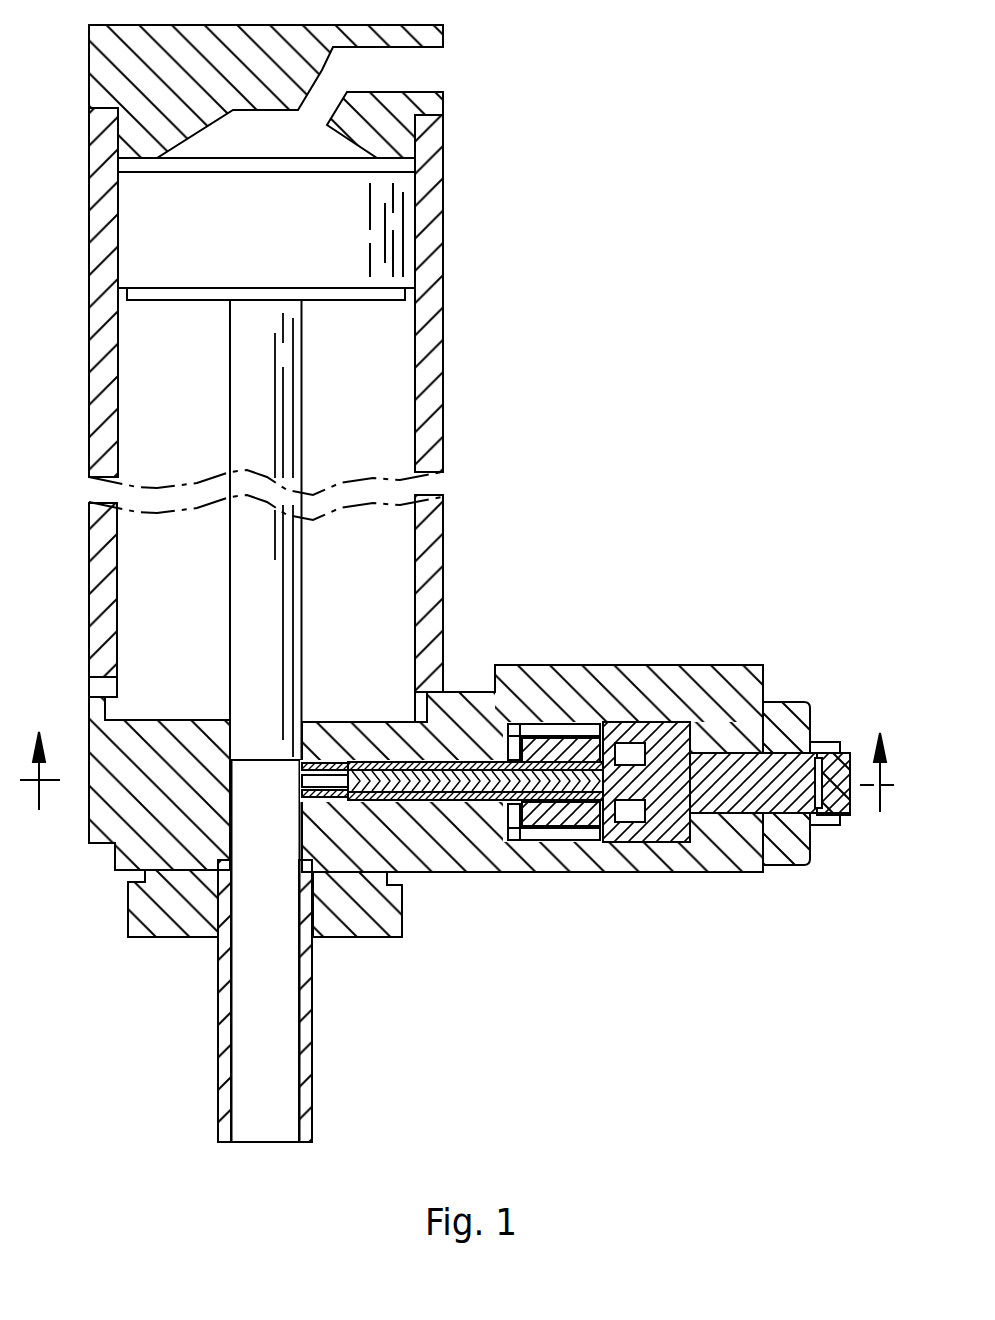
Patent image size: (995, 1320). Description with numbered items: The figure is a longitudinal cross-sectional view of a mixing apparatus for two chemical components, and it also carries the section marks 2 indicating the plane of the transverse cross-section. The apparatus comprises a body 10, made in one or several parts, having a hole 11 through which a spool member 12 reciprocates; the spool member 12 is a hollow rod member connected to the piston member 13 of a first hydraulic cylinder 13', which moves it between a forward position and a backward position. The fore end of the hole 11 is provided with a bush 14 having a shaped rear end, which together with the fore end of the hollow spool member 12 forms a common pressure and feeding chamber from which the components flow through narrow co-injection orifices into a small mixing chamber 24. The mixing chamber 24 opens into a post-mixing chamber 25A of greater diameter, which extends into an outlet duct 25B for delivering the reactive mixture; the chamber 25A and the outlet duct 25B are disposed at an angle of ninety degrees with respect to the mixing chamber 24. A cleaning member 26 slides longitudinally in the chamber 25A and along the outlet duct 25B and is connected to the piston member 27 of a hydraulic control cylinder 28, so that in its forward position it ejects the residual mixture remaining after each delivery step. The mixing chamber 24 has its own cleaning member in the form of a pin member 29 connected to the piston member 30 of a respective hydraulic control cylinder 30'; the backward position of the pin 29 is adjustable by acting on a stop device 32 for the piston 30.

The body 10 is at (105, 815).
The hole 11 is at (465, 793).
The spool member 12 is at (490, 797).
The piston member 13 is at (561, 707).
The first hydraulic cylinder 13' is at (554, 700).
The bush 14 is at (330, 787).
The mixing chamber 24 is at (322, 778).
The post-mixing chamber 25A is at (245, 828).
The outlet duct 25B is at (247, 1035).
The cleaning member 26 is at (285, 597).
The piston member 27 is at (380, 228).
The hydraulic control cylinder 28 is at (428, 367).
The pin member 29 is at (433, 783).
The piston member 30 is at (726, 836).
The hydraulic control cylinder 30' is at (625, 851).
The stop device 32 is at (787, 767).
The section line 2- 2 is at (460, 777).